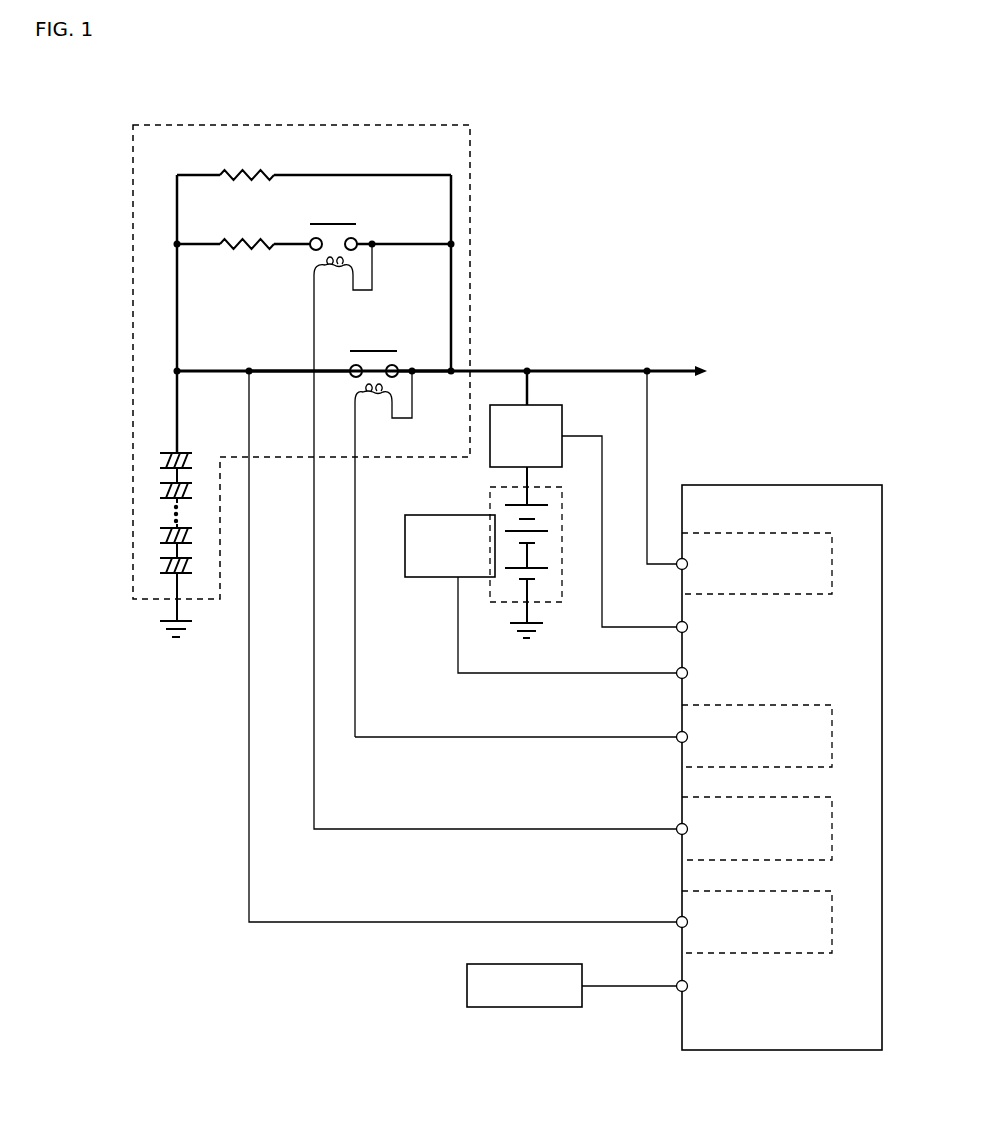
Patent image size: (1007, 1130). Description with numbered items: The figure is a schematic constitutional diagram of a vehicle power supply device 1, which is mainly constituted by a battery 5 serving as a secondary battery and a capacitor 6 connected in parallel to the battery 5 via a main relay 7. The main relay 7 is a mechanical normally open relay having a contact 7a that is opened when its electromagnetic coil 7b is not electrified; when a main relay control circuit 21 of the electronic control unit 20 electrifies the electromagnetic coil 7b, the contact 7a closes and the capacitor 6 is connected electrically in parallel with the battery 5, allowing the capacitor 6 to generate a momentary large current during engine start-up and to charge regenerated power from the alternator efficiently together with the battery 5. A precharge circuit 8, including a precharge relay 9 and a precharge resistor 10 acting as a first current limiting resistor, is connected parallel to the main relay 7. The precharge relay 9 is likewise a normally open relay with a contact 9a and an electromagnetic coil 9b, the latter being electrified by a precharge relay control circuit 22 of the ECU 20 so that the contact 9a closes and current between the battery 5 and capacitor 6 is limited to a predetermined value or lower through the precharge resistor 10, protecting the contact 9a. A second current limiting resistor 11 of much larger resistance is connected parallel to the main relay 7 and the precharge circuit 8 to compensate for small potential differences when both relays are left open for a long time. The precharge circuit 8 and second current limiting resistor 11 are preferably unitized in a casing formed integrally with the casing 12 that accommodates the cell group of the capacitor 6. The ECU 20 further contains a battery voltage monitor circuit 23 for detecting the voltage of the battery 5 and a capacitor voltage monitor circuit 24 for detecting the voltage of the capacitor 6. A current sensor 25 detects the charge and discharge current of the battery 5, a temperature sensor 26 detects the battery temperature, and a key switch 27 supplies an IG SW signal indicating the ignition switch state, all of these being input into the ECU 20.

The vehicle power supply device 1 is at (660, 275).
The battery 5 is at (563, 515).
The capacitor 6 is at (137, 467).
The main relay 7 is at (350, 519).
The contact 7a is at (372, 351).
The electromagnetic coil 7b is at (372, 404).
The precharge circuit 8 is at (314, 254).
The precharge relay 9 is at (357, 276).
The contact 9a is at (335, 224).
The electromagnetic coil 9b is at (333, 278).
The precharge resistor 10 is at (244, 244).
The second current limiting resistor 11 is at (244, 175).
The casing 12 is at (470, 208).
The electronic control unit 20 is at (780, 748).
The main relay control circuit 21 is at (834, 717).
The precharge relay control circuit 22 is at (834, 808).
The battery voltage monitor circuit 23 is at (834, 546).
The capacitor voltage monitor circuit 24 is at (834, 902).
The current sensor 25 is at (564, 416).
The temperature sensor 26 is at (405, 528).
The key switch 27 is at (583, 970).